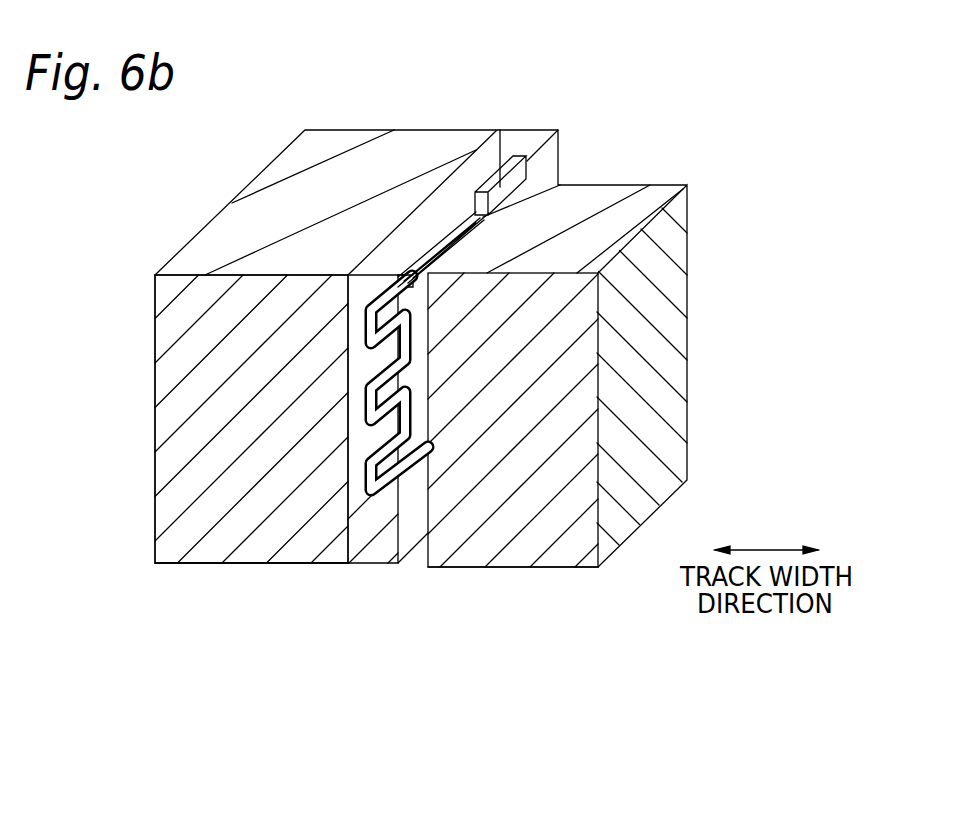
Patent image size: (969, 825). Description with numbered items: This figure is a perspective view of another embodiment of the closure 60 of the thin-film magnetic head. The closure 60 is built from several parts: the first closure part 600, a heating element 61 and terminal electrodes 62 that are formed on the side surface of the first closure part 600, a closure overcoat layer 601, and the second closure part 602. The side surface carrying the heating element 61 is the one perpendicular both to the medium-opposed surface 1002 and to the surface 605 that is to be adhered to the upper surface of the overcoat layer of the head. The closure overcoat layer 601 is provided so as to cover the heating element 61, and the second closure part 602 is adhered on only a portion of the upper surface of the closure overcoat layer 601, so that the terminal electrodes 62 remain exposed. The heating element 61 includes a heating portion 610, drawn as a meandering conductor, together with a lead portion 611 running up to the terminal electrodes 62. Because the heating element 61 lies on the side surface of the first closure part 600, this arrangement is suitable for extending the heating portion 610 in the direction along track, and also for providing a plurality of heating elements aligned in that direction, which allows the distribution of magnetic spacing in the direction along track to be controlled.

The closure 60 is at (310, 498).
The first closure part 600 is at (305, 547).
The closure overcoat layer 601 is at (375, 555).
The second closure part 602 is at (431, 472).
The surface to be adhered to the upper surface of the overcoat layer 605 is at (188, 565).
The heating element 61 is at (279, 326).
The heating portion 610 is at (370, 305).
The lead portion 611 is at (428, 247).
The terminal electrodes 62 is at (513, 182).
The medium-opposed surface 1002 is at (185, 397).